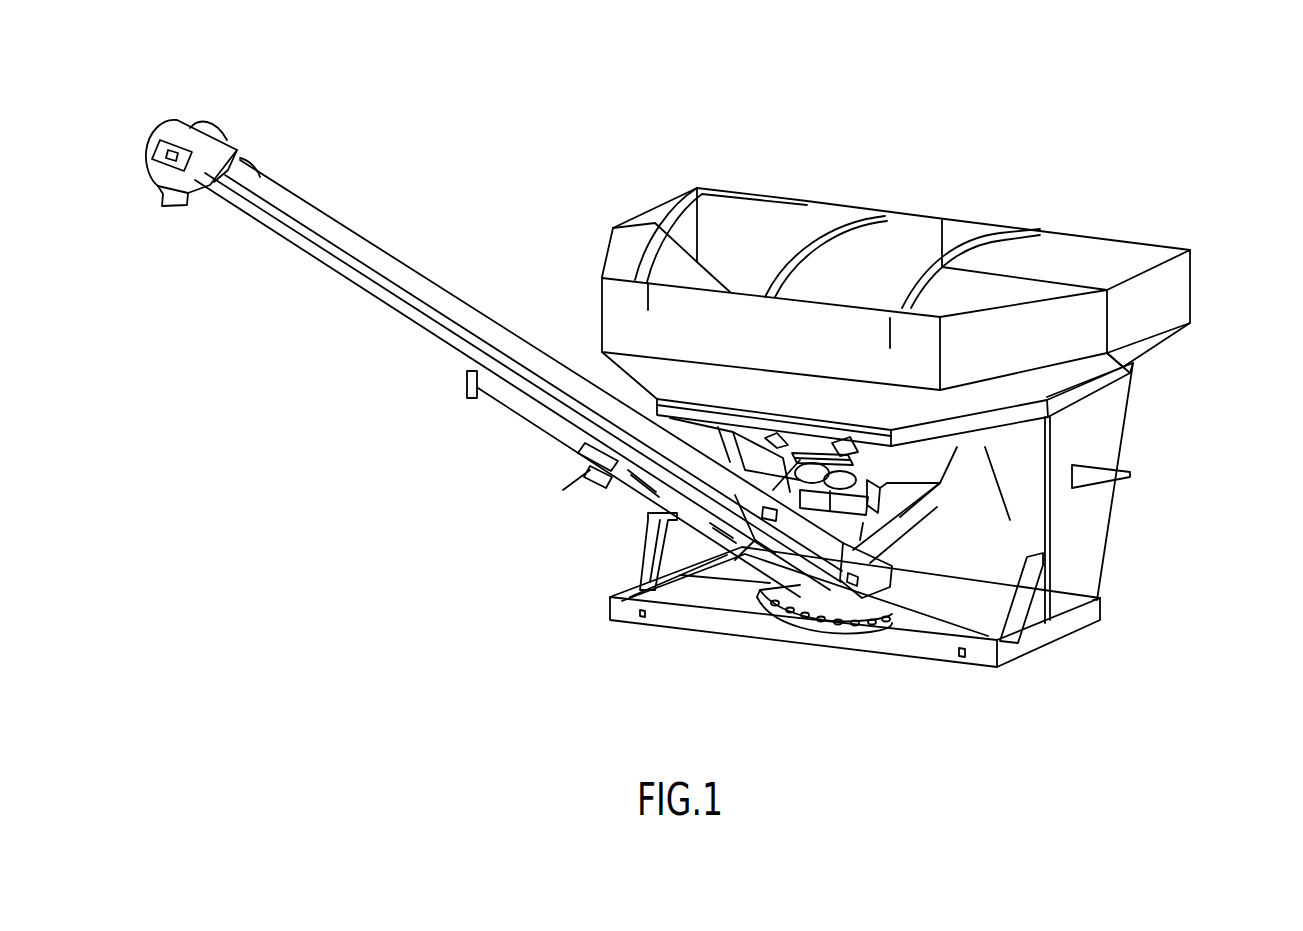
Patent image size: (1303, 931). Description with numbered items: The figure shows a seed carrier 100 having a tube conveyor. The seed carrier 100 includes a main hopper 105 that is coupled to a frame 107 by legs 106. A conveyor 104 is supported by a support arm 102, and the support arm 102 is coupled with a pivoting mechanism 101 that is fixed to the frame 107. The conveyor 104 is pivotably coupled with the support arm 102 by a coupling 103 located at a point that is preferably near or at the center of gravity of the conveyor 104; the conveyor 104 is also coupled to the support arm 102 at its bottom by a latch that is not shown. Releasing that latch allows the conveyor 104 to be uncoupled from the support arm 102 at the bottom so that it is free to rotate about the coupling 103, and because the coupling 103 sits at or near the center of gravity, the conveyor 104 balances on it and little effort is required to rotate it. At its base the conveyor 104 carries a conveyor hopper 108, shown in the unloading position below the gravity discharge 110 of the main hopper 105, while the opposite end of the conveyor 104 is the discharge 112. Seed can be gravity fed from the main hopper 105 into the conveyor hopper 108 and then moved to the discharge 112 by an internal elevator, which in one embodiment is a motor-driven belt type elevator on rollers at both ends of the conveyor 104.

The seed carrier 100 is at (1237, 250).
The pivoting mechanism 101 is at (830, 615).
The support arm 102 is at (517, 413).
The coupling 103 is at (462, 382).
The conveyor 104 is at (375, 232).
The main hopper 105 is at (653, 190).
The legs 106 is at (653, 552).
The frame 107 is at (980, 667).
The conveyor hopper 108 is at (917, 513).
The gravity discharge 110 is at (930, 487).
The discharge 112 is at (147, 142).